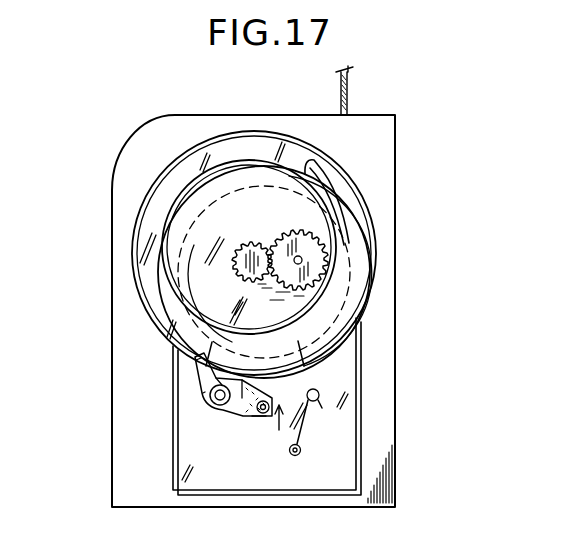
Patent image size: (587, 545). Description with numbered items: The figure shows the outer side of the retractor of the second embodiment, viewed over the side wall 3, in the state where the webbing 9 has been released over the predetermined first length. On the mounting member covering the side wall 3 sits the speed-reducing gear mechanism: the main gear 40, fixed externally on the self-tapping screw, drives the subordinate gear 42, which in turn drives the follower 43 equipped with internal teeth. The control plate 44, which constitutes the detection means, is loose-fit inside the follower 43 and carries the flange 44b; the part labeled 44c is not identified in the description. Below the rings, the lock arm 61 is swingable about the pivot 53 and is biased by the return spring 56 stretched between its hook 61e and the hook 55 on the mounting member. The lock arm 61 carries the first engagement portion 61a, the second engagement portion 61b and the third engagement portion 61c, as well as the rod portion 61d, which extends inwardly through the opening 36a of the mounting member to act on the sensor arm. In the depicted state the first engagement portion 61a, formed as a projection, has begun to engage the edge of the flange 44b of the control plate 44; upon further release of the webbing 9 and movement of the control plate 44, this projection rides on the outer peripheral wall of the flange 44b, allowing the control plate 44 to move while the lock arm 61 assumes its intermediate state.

The side wall 3 is at (147, 138).
The webbing 9 is at (350, 94).
The opening 36a is at (227, 404).
The main gear 40 is at (253, 246).
The subordinate gear 42 is at (284, 250).
The follower 43 is at (318, 212).
The control plate 44 is at (357, 271).
The flange 44b is at (208, 351).
The ring tab 44c is at (318, 168).
The pivot 53 is at (221, 402).
The hook 55 is at (300, 453).
The return spring 56 is at (319, 402).
The lock arm 61 is at (178, 421).
The first engagement portion 61a is at (206, 381).
The second engagement portion 61b is at (207, 392).
The third engagement portion 61c is at (330, 379).
The rod portion 61d is at (258, 417).
The hook 61e is at (268, 420).